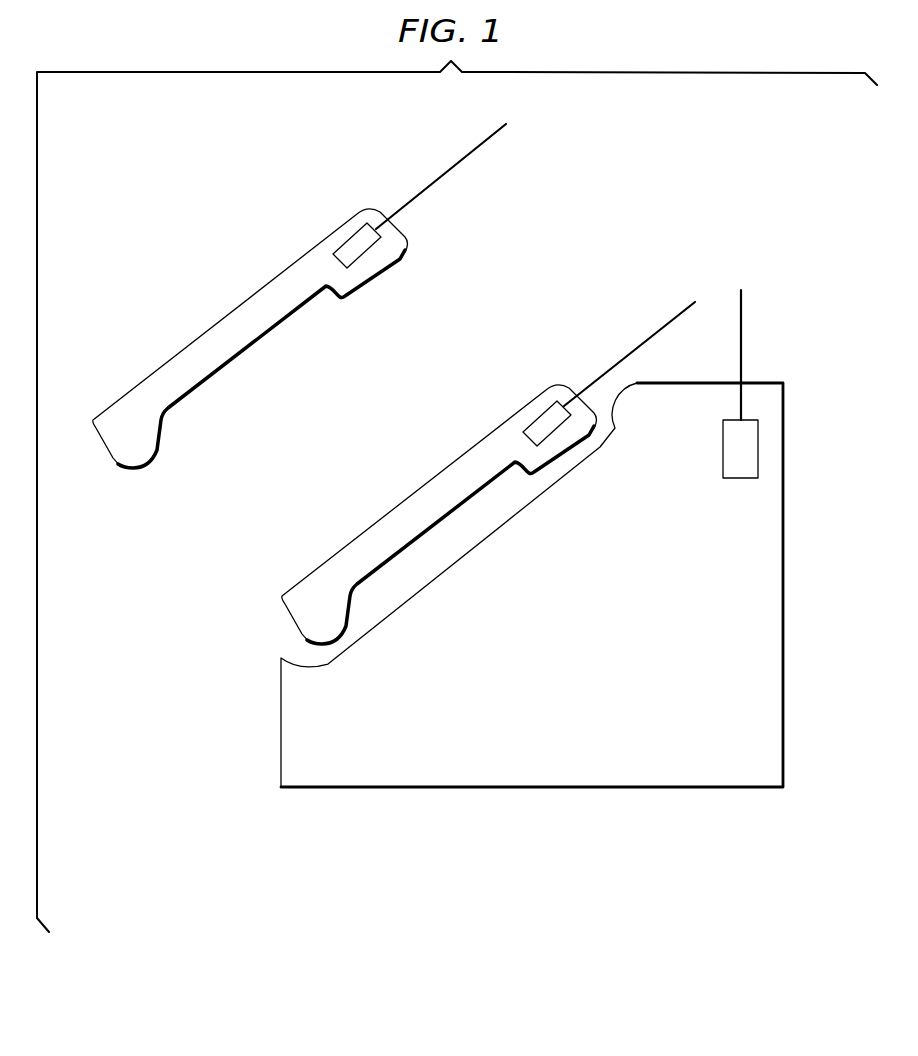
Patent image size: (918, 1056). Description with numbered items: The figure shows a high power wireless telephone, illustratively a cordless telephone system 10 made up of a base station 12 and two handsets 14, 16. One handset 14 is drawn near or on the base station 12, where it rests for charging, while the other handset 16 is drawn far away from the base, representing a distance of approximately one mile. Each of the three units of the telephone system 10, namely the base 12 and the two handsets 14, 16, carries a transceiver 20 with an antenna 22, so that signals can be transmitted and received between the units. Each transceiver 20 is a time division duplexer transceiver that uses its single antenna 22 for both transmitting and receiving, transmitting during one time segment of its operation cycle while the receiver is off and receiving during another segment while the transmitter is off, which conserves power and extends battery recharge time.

The cordless telephone system 10 is at (196, 882).
The base station 12 is at (773, 707).
The handset 14 is at (305, 590).
The handset 16 is at (112, 433).
The transceiver 20 is at (355, 243).
The antenna 22 is at (448, 168).